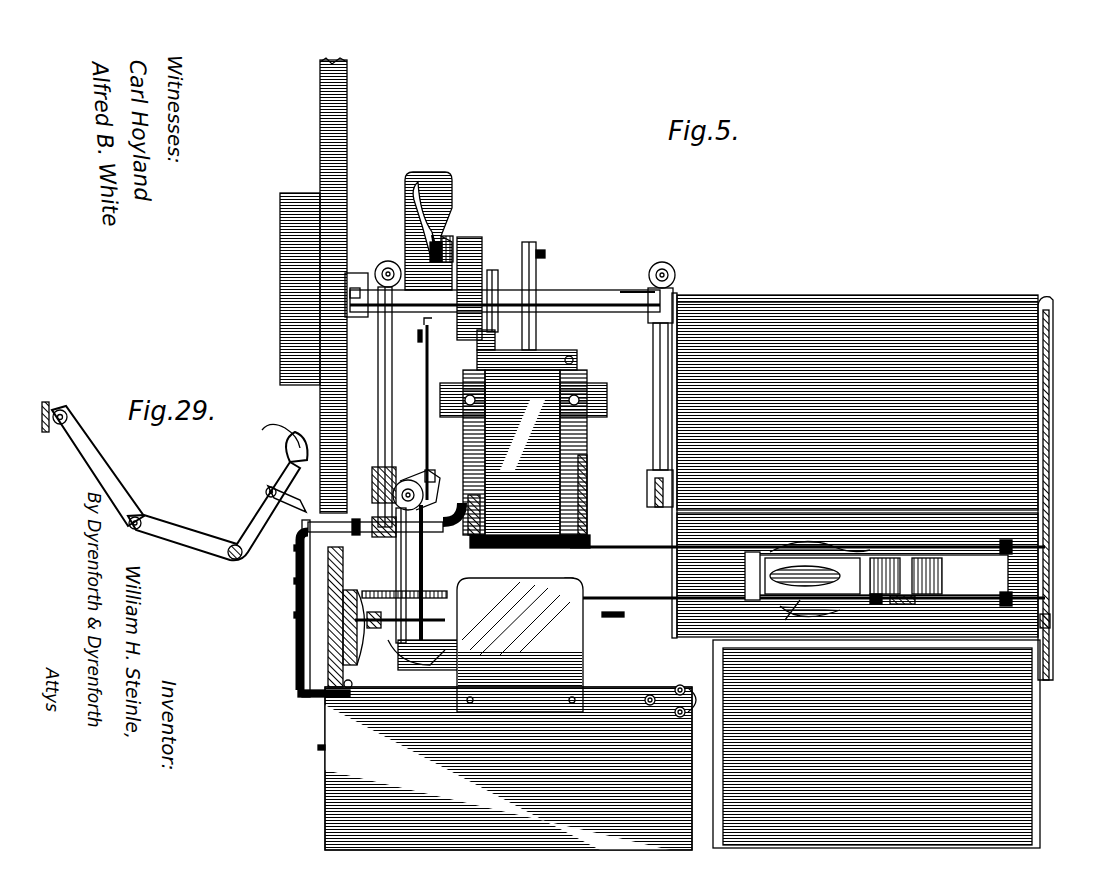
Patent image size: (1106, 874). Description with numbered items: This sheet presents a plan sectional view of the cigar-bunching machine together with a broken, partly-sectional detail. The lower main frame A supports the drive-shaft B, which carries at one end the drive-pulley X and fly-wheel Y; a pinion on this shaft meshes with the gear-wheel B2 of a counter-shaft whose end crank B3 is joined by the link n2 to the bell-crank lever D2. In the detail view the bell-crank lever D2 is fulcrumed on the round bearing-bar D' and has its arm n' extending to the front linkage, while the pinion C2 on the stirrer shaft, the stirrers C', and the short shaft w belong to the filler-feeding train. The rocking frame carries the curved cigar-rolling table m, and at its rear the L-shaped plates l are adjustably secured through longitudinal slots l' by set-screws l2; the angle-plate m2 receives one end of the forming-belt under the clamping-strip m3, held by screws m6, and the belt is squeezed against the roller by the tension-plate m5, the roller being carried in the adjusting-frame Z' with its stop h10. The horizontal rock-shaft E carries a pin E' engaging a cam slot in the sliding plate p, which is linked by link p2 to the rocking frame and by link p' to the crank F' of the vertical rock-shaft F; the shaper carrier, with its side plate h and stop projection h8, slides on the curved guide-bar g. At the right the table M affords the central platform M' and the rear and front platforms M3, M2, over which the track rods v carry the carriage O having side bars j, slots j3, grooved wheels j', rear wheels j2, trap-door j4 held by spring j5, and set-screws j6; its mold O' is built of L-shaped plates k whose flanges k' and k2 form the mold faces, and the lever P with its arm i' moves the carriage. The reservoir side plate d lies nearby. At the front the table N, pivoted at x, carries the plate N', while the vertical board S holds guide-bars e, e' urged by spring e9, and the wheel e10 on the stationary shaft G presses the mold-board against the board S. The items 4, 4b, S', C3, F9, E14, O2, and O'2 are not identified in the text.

In FIG. 5, the fly-wheel Y is at (347, 215).
In FIG. 5, the drive-pulley X is at (298, 276).
In FIG. 5, the drive-shaft B is at (574, 294).
In FIG. 5, the shaft portion 4 is at (624, 300).
In FIG. 5, the link p' is at (400, 394).
In FIG. 5, the sliding plate p is at (413, 409).
In FIG. 5, the link p2 is at (424, 336).
In FIG. 5, the vertical rock-shaft F is at (371, 485).
In FIG. 5, the carriage O is at (428, 213).
In FIG. 5, the receptacle or mold O' is at (448, 208).
In FIG. 5, the pin E' is at (405, 244).
In FIG. 5, the horizontal rock-shaft E is at (408, 412).
In FIG. 5, the gear-wheel B2 is at (472, 238).
In FIG. 5, the crank B3 is at (500, 301).
In FIG. 5, the sleeve S' is at (497, 256).
In FIG. 5, the link n2 is at (532, 276).
In FIG. 29, the link n2 is at (286, 496).
In FIG. 5, the lower main frame portion A is at (657, 361).
In FIG. 5, the cigar-rolling table m is at (588, 452).
In FIG. 5, the angle-plate m2 is at (490, 352).
In FIG. 5, the clamping-strip m3 is at (516, 366).
In FIG. 5, the screws m6 is at (572, 356).
In FIG. 5, the set-screws l2 is at (610, 428).
In FIG. 5, the longitudinal slot l' is at (523, 388).
In FIG. 5, the L-shaped plates l is at (614, 371).
In FIG. 5, the adjusting-frame Z' is at (597, 495).
In FIG. 5, the L-shaped plates k is at (483, 494).
In FIG. 5, the guide-bar g is at (508, 491).
In FIG. 5, the side plate h is at (436, 559).
In FIG. 5, the tension-plate m5 is at (522, 548).
In FIG. 5, the track rods v is at (650, 549).
In FIG. 5, the rod C3 is at (613, 612).
In FIG. 5, the crank F' is at (416, 484).
In FIG. 5, the arm F9 is at (432, 468).
In FIG. 5, the stationary horizontal shaft G is at (396, 562).
In FIG. 5, the guide-bar e' is at (398, 574).
In FIG. 5, the stop h10 is at (445, 538).
In FIG. 5, the stop projection h8 is at (468, 540).
In FIG. 5, the vertical board S is at (316, 608).
In FIG. 5, the guide-bar e is at (355, 627).
In FIG. 5, the spring e9 is at (352, 686).
In FIG. 5, the bracket E14 is at (423, 661).
In FIG. 5, the plate N' is at (520, 645).
In FIG. 5, the wheel e10 is at (478, 595).
In FIG. 5, the table N is at (505, 767).
In FIG. 5, the pivot x is at (696, 688).
In FIG. 5, the rear platform M3 is at (857, 402).
In FIG. 5, the table M is at (774, 434).
In FIG. 5, the lever P is at (1052, 628).
In FIG. 5, the upward-projecting arm i' is at (1053, 610).
In FIG. 5, the central platform M' is at (857, 575).
In FIG. 5, the trap-door j4 is at (745, 574).
In FIG. 5, the cam O2 is at (809, 540).
In FIG. 5, the horizontal flanges k2 is at (806, 560).
In FIG. 5, the side plate d is at (850, 575).
In FIG. 5, the grooved wheels j' is at (915, 564).
In FIG. 5, the wheels j2 is at (1000, 548).
In FIG. 5, the set-screws j6 is at (745, 552).
In FIG. 5, the spring j5 is at (745, 600).
In FIG. 5, the downward-extending flanges k' is at (785, 618).
In FIG. 5, the cam O'2 is at (810, 620).
In FIG. 5, the side bars j is at (869, 613).
In FIG. 5, the slots j3 is at (900, 606).
In FIG. 5, the front platform M2 is at (876, 744).
In FIG. 5, the frame bolt 4b is at (310, 694).
In FIG. 29, the stirrers C' is at (60, 407).
In FIG. 29, the pinion C2 is at (98, 467).
In FIG. 29, the bell-crank lever D2 is at (218, 492).
In FIG. 29, the short shaft w is at (272, 535).
In FIG. 29, the arm n' is at (160, 551).
In FIG. 29, the bearing-bar D' is at (248, 569).